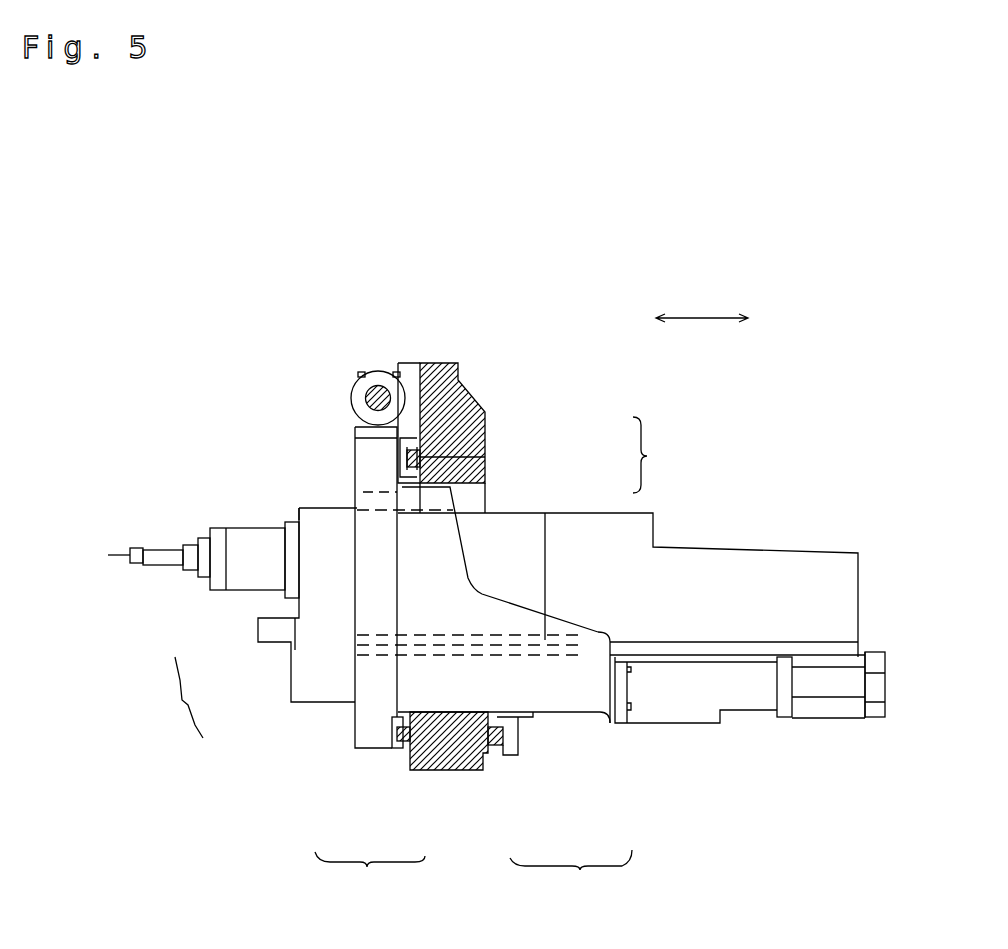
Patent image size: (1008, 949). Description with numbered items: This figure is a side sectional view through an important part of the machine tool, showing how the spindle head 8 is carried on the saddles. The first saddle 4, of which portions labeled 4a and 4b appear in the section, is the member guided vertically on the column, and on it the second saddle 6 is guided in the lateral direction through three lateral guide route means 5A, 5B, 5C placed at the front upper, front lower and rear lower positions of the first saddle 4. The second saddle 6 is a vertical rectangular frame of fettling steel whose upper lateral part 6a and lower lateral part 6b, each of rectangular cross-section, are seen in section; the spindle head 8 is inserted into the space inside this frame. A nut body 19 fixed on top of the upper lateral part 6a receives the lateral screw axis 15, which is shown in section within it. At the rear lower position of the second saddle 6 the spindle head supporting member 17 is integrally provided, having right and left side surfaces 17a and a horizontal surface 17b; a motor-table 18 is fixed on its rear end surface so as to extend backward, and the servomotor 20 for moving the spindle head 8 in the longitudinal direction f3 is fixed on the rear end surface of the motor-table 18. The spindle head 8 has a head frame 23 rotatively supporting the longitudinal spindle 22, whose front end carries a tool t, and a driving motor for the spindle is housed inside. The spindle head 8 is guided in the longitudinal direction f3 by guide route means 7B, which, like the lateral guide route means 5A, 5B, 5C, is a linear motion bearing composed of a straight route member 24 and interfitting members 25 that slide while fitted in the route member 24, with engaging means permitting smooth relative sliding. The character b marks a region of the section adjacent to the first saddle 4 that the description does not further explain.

The first saddle 4 is at (503, 424).
The upper clamp member 4a is at (450, 363).
The lower clamp member 4b is at (457, 767).
The lateral guide route means 5A is at (662, 455).
The lateral guide route means 5B is at (370, 882).
The lateral guide route means 5C is at (571, 879).
The second saddle 6 is at (344, 576).
The upper lateral part 6a is at (353, 443).
The lower lateral part 6b is at (357, 737).
The guide route means 7B is at (170, 697).
The spindle head 8 is at (212, 472).
The lateral screw axis 15 is at (365, 395).
The spindle head supporting member 17 is at (308, 716).
The side surface 17a is at (470, 597).
The horizontal surface 17b is at (563, 697).
The motor-table 18 is at (706, 713).
The nut body 19 is at (377, 377).
The servomotor 20 is at (837, 682).
The spindle 22 is at (190, 575).
The head frame 23 is at (322, 517).
The straight route member 24 is at (490, 447).
The interfitting member 25 is at (490, 470).
The gap b is at (487, 497).
The tool t is at (114, 555).
The longitudinal direction f3 is at (728, 321).